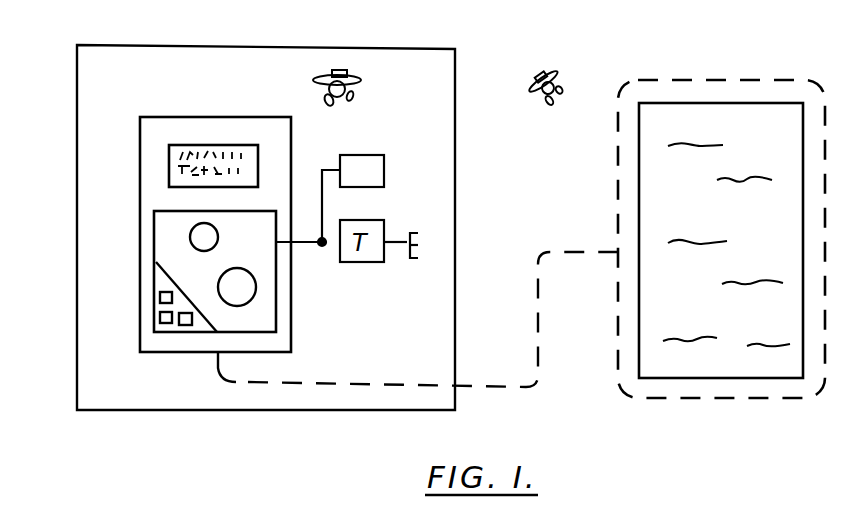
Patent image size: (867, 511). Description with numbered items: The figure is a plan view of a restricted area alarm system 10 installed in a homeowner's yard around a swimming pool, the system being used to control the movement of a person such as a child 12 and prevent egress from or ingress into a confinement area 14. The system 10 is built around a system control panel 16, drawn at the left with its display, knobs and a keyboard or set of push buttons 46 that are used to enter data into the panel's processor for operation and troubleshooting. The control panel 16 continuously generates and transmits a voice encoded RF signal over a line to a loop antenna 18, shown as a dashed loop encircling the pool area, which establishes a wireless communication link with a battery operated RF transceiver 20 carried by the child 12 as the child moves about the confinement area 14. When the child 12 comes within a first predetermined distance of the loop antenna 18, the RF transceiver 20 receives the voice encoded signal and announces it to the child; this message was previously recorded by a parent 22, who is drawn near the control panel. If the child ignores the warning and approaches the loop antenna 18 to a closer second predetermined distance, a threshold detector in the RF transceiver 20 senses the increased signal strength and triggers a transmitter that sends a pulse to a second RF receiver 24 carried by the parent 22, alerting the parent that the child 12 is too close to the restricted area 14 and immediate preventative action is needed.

The restricted area alarm system 10 is at (122, 135).
The child 12 is at (532, 97).
The confinement area 14 is at (706, 134).
The system control panel 16 is at (200, 335).
The loop antenna 18 is at (618, 327).
The RF transceiver 20 is at (538, 70).
The parent 22 is at (325, 55).
The second RF receiver 24 is at (340, 66).
The keyboard or set of push buttons 46 is at (153, 307).